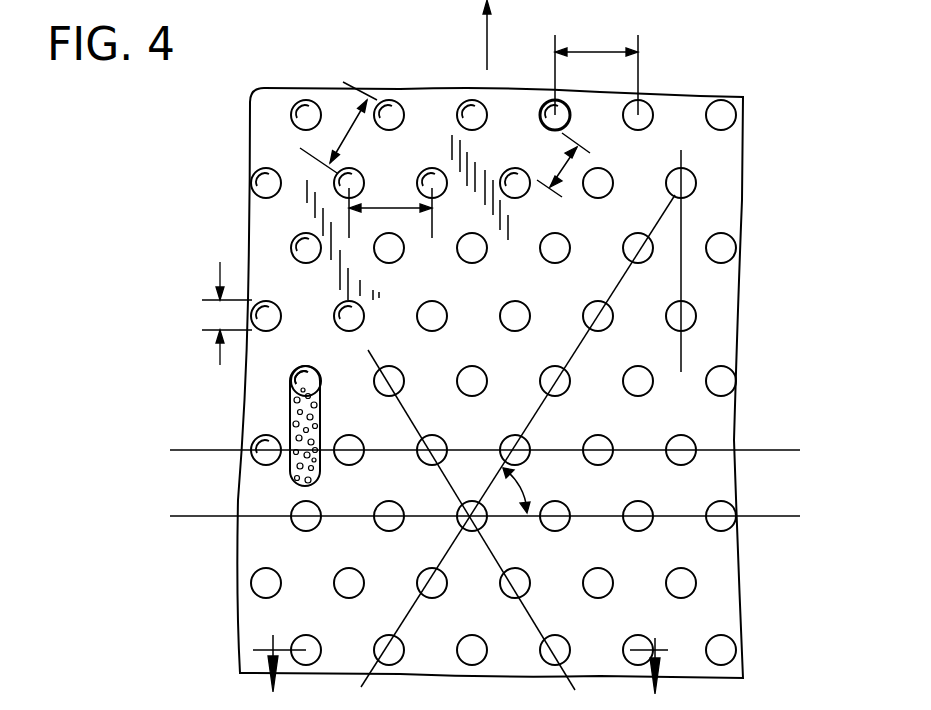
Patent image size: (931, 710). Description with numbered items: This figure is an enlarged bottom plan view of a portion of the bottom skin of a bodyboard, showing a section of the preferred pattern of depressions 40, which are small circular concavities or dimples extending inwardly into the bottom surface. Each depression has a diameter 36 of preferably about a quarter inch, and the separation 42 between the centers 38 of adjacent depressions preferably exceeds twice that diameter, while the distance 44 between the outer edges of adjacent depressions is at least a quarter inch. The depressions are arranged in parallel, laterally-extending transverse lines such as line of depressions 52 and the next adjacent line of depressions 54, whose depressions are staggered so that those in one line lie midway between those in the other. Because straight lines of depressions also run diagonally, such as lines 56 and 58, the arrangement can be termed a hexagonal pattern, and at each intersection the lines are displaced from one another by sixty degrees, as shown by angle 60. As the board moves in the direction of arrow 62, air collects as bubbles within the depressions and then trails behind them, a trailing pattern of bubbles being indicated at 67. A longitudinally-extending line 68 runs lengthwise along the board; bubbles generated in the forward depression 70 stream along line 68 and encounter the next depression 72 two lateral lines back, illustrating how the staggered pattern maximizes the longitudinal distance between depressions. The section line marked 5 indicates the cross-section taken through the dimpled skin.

The section line 5- 5 is at (460, 655).
The diameter 36 is at (218, 316).
The centers 38 is at (461, 109).
The depressions 40 is at (340, 305).
The separation 42 is at (348, 128).
The distance 44 is at (560, 163).
The line of depressions 52 is at (219, 448).
The line of depressions 54 is at (219, 515).
The line 56 is at (494, 549).
The line 58 is at (449, 553).
The angle 60 is at (528, 481).
The arrow 62 is at (486, 22).
The trailing pattern of bubbles 67 is at (292, 418).
The longitudinally-extending line 68 is at (683, 265).
The depression 70 is at (697, 188).
The depression 72 is at (697, 318).